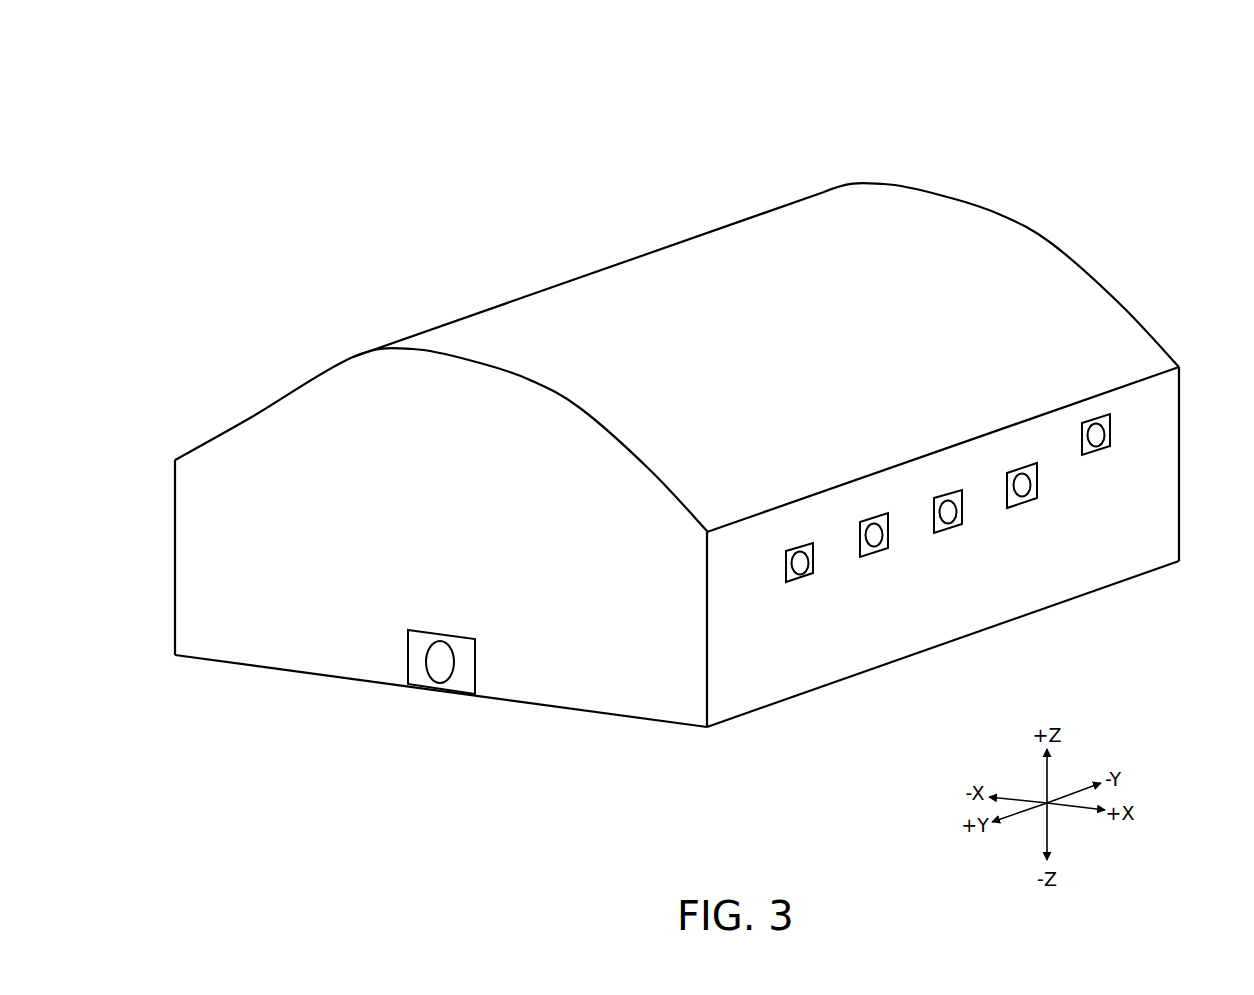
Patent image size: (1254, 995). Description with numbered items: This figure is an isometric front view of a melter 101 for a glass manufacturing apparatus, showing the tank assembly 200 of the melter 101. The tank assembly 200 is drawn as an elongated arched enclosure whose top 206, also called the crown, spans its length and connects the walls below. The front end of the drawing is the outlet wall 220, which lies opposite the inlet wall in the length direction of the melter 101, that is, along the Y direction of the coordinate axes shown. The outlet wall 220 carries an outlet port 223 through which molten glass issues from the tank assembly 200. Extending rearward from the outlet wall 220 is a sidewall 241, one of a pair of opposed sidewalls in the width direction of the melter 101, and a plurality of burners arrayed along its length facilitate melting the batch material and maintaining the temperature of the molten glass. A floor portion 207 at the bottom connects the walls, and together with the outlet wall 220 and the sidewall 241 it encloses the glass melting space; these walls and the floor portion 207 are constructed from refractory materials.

The melter 101 is at (675, 460).
The tank assembly 200 is at (675, 492).
The top 206 is at (605, 290).
The outlet wall 220 is at (193, 573).
The outlet port 223 is at (442, 692).
The floor portion 207 is at (677, 707).
The sidewall 241 is at (1158, 445).